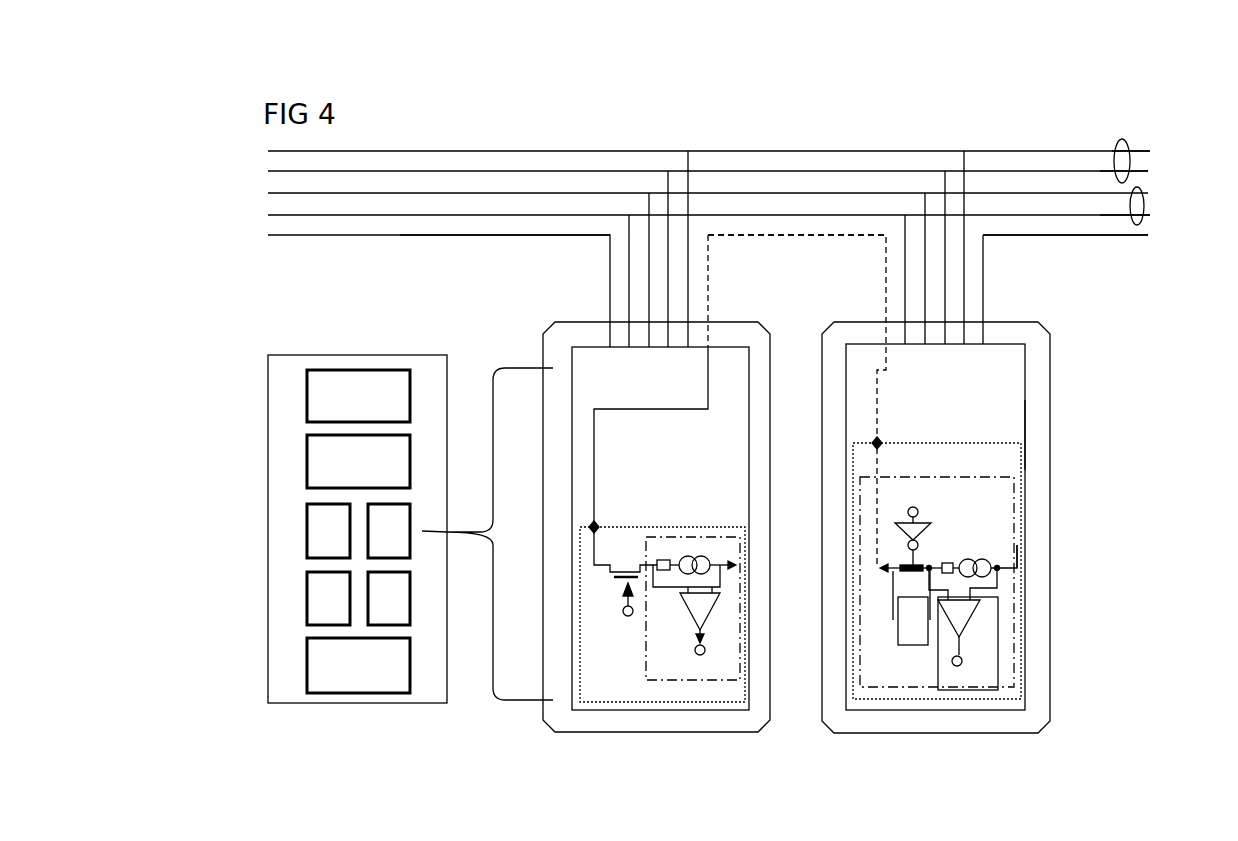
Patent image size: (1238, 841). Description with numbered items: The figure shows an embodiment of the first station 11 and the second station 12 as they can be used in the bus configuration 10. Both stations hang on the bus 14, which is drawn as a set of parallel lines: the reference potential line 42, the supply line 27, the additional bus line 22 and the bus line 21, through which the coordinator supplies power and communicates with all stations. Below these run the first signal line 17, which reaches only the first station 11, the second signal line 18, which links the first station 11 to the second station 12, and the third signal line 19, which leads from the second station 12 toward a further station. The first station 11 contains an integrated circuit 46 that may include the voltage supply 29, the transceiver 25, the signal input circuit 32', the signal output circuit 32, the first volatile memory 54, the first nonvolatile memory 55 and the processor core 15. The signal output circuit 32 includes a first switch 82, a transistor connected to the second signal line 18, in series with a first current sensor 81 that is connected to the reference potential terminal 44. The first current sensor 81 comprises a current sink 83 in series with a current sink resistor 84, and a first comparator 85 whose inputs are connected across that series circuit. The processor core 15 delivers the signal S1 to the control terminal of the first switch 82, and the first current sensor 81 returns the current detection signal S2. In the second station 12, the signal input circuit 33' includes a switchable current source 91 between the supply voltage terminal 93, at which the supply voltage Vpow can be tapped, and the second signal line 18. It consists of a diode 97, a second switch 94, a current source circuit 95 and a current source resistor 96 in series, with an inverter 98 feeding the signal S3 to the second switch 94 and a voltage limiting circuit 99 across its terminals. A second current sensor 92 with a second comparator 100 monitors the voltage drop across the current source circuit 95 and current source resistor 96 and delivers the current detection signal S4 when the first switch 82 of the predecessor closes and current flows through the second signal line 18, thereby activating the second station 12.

The bus configuration 10 is at (1068, 101).
The bus 14 is at (1200, 143).
The reference potential line 42 is at (1133, 158).
The supply line 27 is at (1133, 168).
The additional bus line 22 is at (1145, 194).
The bus line 21 is at (1145, 218).
The first signal line 17 is at (495, 240).
The second signal line 18 is at (790, 242).
The third signal line 19 is at (1073, 242).
The integrated circuit 46 is at (410, 705).
The voltage supply 29 is at (305, 412).
The transceiver 25 is at (305, 473).
The signal input circuit 32' is at (309, 531).
The signal output circuit 32 is at (585, 581).
The first volatile memory 54 is at (305, 612).
The first nonvolatile memory 55 is at (412, 595).
The processor core 15 is at (413, 668).
The first station 11 is at (727, 735).
The second station 12 is at (995, 735).
The signal input circuit 33' is at (1066, 435).
The reference potential terminal 44 is at (733, 560).
The first current sensor 81 is at (648, 675).
The first switch 82 is at (618, 580).
The current sink 83 is at (701, 556).
The current sink resistor 84 is at (665, 558).
The first comparator 85 is at (684, 605).
The signal S1 is at (619, 627).
The current detection signal S2 is at (713, 643).
The switchable current source 91 is at (969, 477).
The second current sensor 92 is at (1021, 655).
The supply voltage terminal 93 is at (996, 564).
The second switch 94 is at (905, 566).
The current source circuit 95 is at (973, 561).
The current source resistor 96 is at (944, 562).
The diode 97 is at (887, 572).
The inverter 98 is at (906, 523).
The voltage limiting circuit 99 is at (905, 645).
The second comparator 100 is at (963, 625).
The signal S3 is at (920, 516).
The current detection signal S4 is at (974, 670).
The supply voltage Vpow is at (1009, 551).